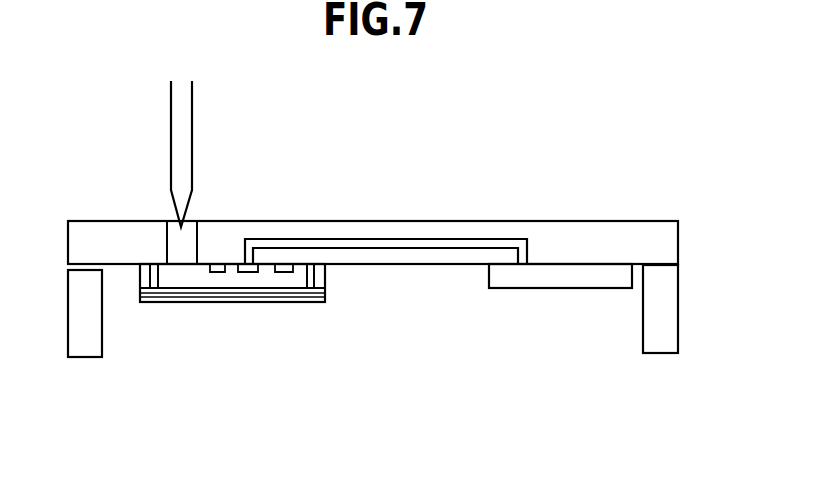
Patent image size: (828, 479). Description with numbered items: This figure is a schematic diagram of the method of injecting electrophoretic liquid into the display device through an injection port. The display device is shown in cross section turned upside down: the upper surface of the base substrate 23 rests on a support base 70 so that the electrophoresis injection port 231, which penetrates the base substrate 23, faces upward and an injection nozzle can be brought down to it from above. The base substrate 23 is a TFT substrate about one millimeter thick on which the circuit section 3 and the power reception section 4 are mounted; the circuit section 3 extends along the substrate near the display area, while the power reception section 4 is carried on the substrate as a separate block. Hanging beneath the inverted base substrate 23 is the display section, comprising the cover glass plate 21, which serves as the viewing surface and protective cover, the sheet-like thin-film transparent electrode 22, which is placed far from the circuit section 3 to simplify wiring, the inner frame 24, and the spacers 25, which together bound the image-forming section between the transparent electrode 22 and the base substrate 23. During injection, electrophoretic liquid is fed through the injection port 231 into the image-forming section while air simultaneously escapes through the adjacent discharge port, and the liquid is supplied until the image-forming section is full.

The circuit section 3 is at (392, 238).
The power reception section 4 is at (535, 290).
The cover glass plate 21 is at (223, 302).
The transparent electrode 22 is at (180, 295).
The base substrate 23 is at (585, 230).
The inner frame 24 is at (320, 275).
The spacers 25 is at (310, 302).
The support base 70 is at (83, 357).
The electrophoresis injection port 231 is at (193, 243).